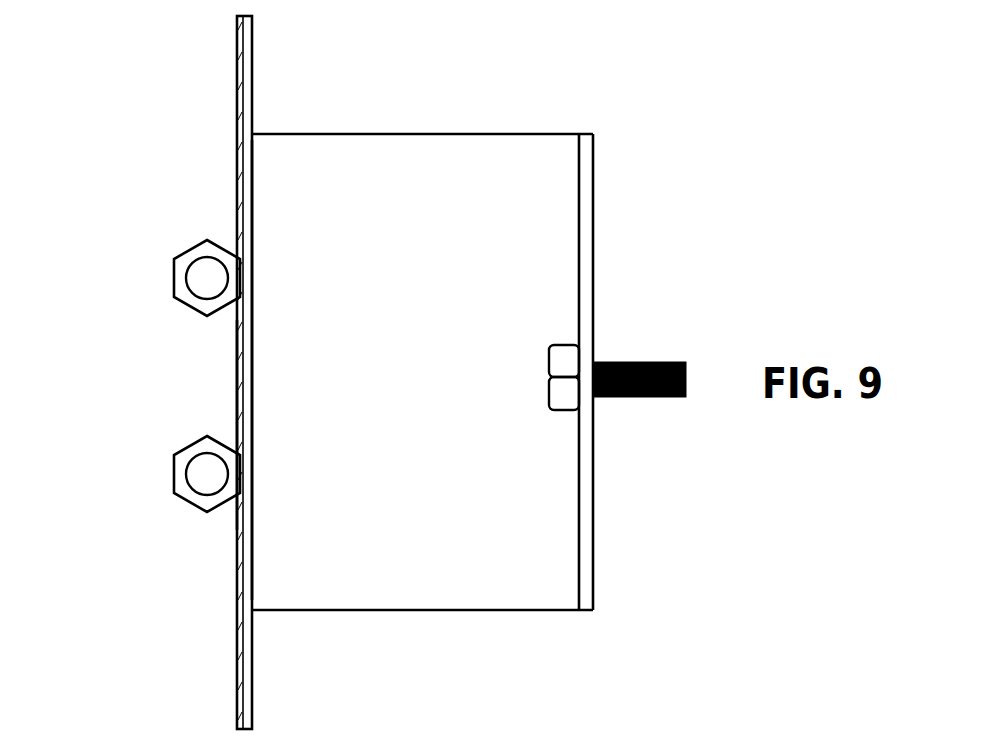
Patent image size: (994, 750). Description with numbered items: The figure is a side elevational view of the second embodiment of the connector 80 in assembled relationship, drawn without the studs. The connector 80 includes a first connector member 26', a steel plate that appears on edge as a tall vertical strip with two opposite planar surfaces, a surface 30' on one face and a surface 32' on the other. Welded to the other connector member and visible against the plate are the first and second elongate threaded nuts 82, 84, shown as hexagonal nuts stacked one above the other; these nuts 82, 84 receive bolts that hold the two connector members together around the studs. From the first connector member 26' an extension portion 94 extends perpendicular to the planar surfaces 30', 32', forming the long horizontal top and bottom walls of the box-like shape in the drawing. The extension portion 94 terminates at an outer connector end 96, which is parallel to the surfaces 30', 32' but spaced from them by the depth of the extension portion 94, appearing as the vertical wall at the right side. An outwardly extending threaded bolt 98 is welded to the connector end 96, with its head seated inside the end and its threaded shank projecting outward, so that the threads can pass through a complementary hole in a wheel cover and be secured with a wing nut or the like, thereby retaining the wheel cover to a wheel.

The first connector member 26' is at (166, 372).
The planar surface of first connector member 30' is at (185, 479).
The planar surface of first connector member 32' is at (316, 370).
The connector 80 is at (633, 502).
The first elongate threaded nut 82 is at (168, 480).
The second elongate threaded nut 84 is at (183, 247).
The extension portion 94 is at (482, 134).
The outer connector end 96 is at (597, 187).
The threaded bolt 98 is at (642, 362).